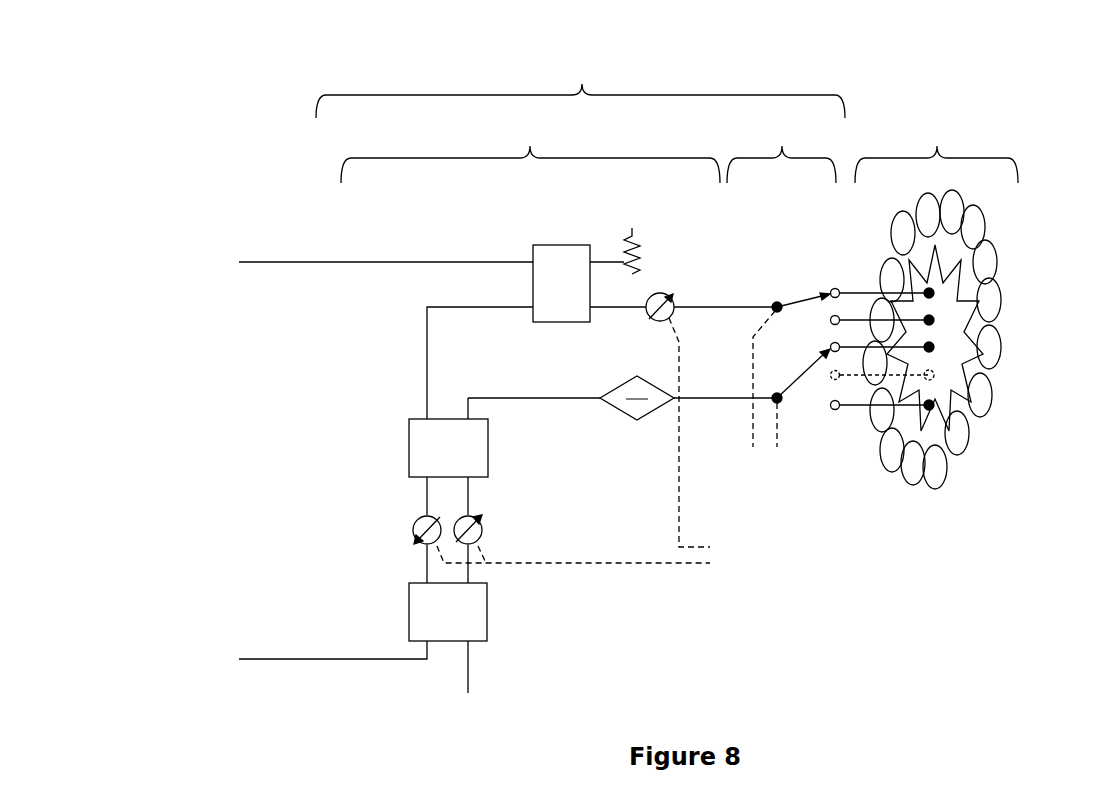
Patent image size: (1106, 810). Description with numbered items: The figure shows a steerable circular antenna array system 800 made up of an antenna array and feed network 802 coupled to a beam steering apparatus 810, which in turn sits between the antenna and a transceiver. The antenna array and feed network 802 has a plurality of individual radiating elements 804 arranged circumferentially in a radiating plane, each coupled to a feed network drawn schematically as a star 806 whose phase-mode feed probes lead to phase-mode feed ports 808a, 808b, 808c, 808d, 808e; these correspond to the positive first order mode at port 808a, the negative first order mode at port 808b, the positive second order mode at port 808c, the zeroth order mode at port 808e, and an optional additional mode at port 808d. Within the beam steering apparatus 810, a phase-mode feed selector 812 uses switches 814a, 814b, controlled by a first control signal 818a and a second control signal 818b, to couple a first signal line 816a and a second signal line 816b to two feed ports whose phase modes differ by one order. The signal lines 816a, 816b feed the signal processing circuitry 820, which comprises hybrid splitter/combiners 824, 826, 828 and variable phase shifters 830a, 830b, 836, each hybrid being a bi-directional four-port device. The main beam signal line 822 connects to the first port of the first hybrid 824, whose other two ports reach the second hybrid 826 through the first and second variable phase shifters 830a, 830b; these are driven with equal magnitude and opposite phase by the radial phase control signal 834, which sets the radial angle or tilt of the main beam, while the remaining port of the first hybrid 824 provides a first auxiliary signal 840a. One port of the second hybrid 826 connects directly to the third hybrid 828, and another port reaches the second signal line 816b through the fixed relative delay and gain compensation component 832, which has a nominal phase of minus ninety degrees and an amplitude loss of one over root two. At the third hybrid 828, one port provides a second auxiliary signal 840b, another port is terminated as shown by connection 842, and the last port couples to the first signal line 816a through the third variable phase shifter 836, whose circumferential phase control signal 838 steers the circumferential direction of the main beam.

The steerable antenna array system 800 is at (668, 29).
The antenna array and feed network 802 is at (975, 304).
The radiating elements 804 is at (975, 218).
The feed network 806 is at (977, 258).
The phase-mode feed port 808a is at (929, 293).
The phase-mode feed port 808b is at (929, 320).
The phase-mode feed port 808c is at (929, 347).
The phase-mode feed port 808d is at (934, 375).
The phase-mode feed port 808e is at (929, 405).
The beam steering apparatus 810 is at (580, 89).
The phase-mode feed selector 812 is at (781, 153).
The switch 814a is at (778, 298).
The switch 814b is at (778, 394).
The first signal line 816a is at (722, 305).
The second signal line 816b is at (716, 396).
The control signal S1 818a is at (753, 420).
The control signal S2 818b is at (777, 440).
The signal processing circuitry 820 is at (530, 153).
The main beam signal line 822 is at (470, 667).
The first hybrid 824 is at (409, 607).
The second hybrid 826 is at (409, 444).
The third hybrid 828 is at (553, 245).
The first variable phase shifter 830a is at (413, 519).
The second variable phase shifter 830b is at (484, 532).
The fixed relative delay and gain compensation component 832 is at (608, 388).
The phase control signal φ 834 is at (685, 565).
The third variable phase shifter 836 is at (665, 292).
The phase control signal θ 838 is at (696, 546).
The auxiliary signal A1 840a is at (266, 658).
The auxiliary signal A2 840b is at (272, 264).
The termination connection 842 is at (624, 240).